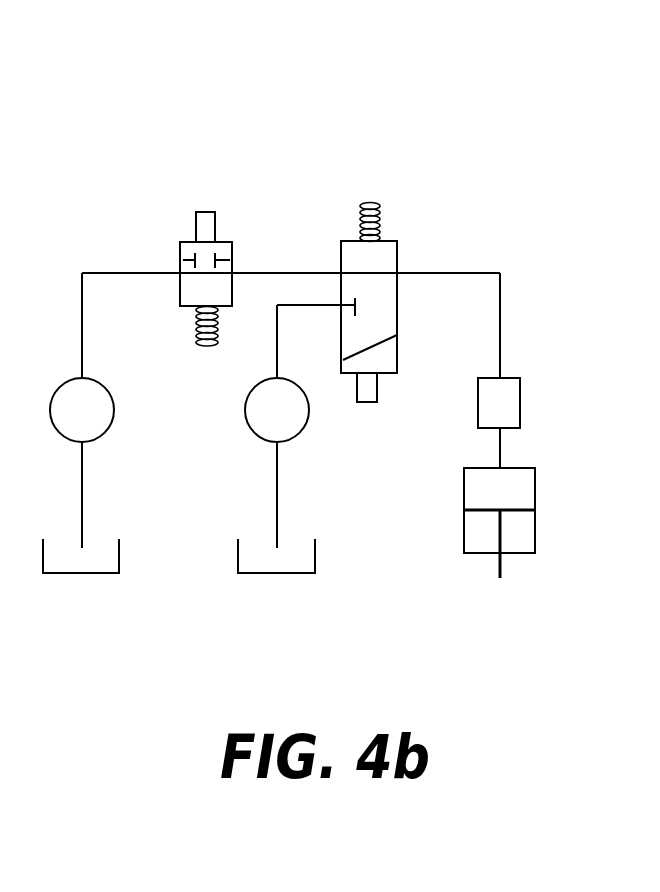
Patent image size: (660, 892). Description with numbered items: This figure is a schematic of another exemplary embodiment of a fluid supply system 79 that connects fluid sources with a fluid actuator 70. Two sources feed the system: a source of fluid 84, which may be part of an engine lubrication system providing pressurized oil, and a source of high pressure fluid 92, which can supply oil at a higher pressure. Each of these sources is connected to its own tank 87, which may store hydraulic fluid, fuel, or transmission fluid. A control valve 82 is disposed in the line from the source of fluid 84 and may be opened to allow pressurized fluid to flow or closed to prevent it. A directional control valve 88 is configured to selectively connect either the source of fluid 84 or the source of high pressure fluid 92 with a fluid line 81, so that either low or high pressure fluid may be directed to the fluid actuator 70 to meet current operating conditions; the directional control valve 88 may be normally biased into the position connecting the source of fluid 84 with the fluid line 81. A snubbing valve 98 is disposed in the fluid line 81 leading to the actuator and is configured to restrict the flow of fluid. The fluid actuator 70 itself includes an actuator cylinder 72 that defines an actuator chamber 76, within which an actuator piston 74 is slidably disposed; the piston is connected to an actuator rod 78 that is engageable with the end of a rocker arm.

The fluid supply system 79 is at (355, 171).
The fluid line 81 is at (500, 305).
The control valve 82 is at (232, 242).
The directional control valve 88 is at (414, 257).
The source of fluid 84 is at (113, 410).
The source of high pressure fluid 92 is at (309, 412).
The tank 87 is at (80, 573).
The snubbing valve 98 is at (520, 395).
The fluid actuator 70 is at (512, 524).
The actuator chamber 76 is at (465, 480).
The actuator piston 74 is at (485, 513).
The actuator cylinder 72 is at (535, 530).
The actuator rod 78 is at (502, 565).